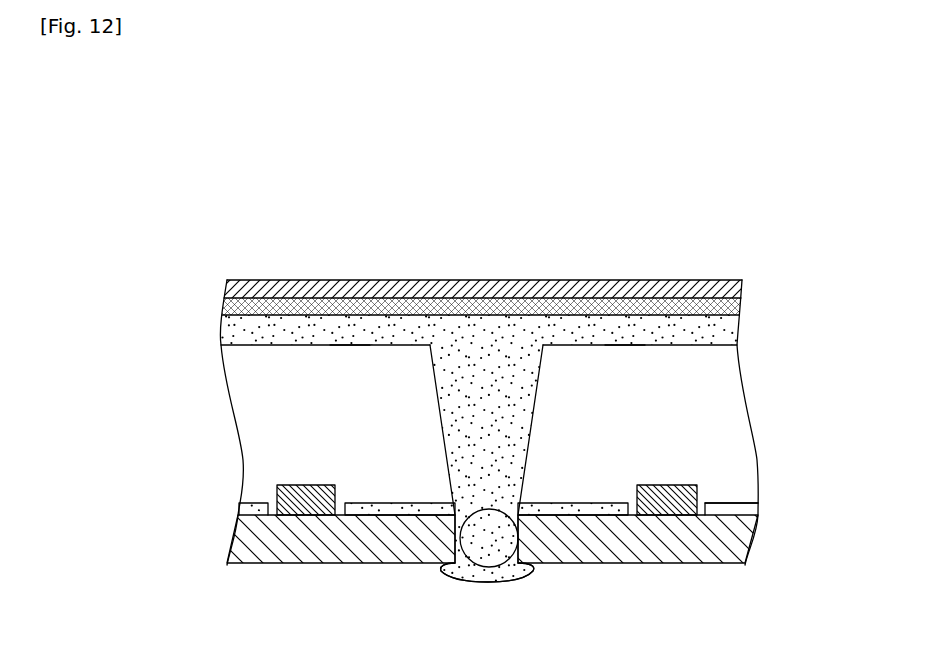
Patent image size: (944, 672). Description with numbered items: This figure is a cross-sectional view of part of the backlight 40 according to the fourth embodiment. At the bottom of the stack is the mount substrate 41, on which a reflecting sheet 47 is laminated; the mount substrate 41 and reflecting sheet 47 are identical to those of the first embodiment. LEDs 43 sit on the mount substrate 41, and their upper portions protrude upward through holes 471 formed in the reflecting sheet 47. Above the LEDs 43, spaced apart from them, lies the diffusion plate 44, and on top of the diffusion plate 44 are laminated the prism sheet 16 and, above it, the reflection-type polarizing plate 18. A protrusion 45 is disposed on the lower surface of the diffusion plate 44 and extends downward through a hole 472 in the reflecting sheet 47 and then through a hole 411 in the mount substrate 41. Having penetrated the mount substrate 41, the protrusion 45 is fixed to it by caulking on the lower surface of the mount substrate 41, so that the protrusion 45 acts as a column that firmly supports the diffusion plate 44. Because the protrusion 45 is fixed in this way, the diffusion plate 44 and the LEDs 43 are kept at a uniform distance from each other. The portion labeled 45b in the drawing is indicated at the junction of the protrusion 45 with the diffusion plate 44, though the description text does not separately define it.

The backlight 40 is at (746, 197).
The reflection-type polarizing plate 18 is at (743, 290).
The prism sheet 16 is at (740, 311).
The diffusion plate 44 is at (228, 322).
The protrusion 45 is at (452, 408).
The connection portion 45b is at (362, 346).
The LEDs 43 is at (300, 485).
The reflecting sheet 47 is at (759, 508).
The holes 471 is at (700, 518).
The hole 472 is at (512, 568).
The hole 411 is at (464, 567).
The mount substrate 41 is at (230, 547).